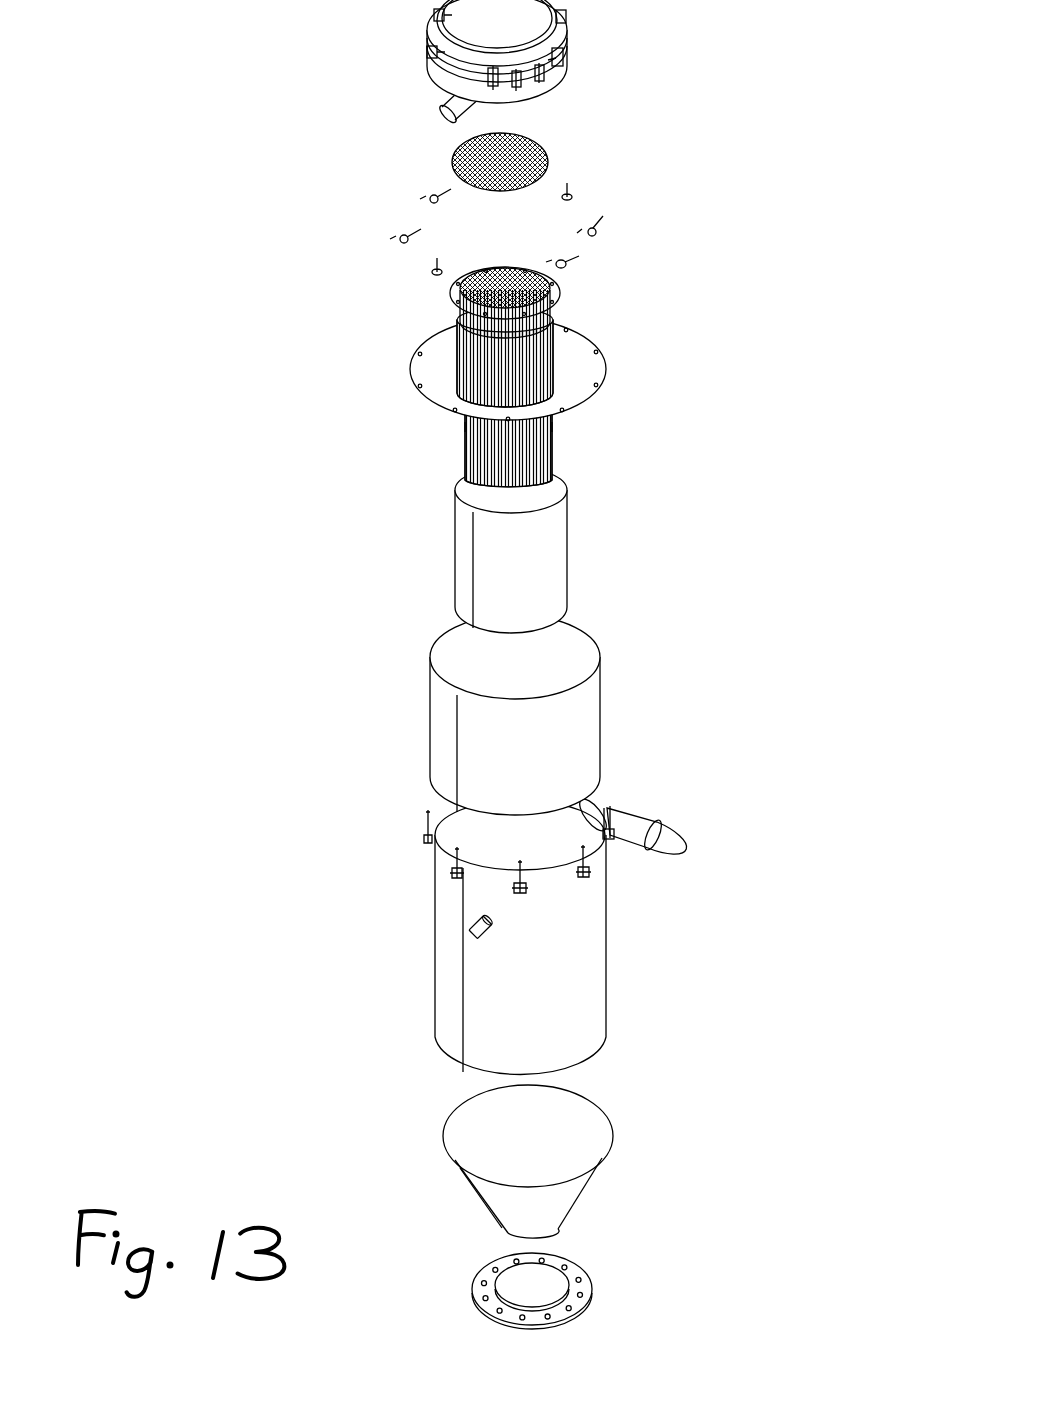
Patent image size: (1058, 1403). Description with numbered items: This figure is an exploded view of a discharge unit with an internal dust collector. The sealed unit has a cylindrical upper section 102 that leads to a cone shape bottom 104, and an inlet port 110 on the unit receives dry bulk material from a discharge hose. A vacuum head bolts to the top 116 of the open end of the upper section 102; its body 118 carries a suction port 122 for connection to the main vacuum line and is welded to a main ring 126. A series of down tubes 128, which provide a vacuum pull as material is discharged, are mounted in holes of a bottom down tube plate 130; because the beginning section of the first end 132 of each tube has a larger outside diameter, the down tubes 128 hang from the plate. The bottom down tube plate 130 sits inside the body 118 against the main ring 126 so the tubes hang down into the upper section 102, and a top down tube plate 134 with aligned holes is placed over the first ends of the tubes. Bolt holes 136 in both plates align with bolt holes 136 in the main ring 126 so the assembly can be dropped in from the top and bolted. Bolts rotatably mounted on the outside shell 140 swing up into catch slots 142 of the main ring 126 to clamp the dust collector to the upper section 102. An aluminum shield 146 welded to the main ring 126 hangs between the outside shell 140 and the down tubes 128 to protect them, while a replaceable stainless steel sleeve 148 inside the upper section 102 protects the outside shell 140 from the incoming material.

The upper section 102 is at (614, 988).
The cone shape bottom 104 is at (612, 1180).
The inlet port 110 is at (640, 817).
The top 116 is at (428, 823).
The body 118 is at (562, 55).
The suction port 122 is at (442, 99).
The main ring 126 is at (598, 364).
The down tubes 128 is at (553, 453).
The bottom down tube plate 130 is at (562, 294).
The first end 132 is at (463, 322).
The top down tube plate 134 is at (547, 163).
The bolt holes 136 is at (467, 314).
The outside shell 140 is at (577, 970).
The catch slots 142 is at (450, 410).
The aluminum shield 146 is at (563, 548).
The replaceable stainless steel sleeve 148 is at (602, 700).